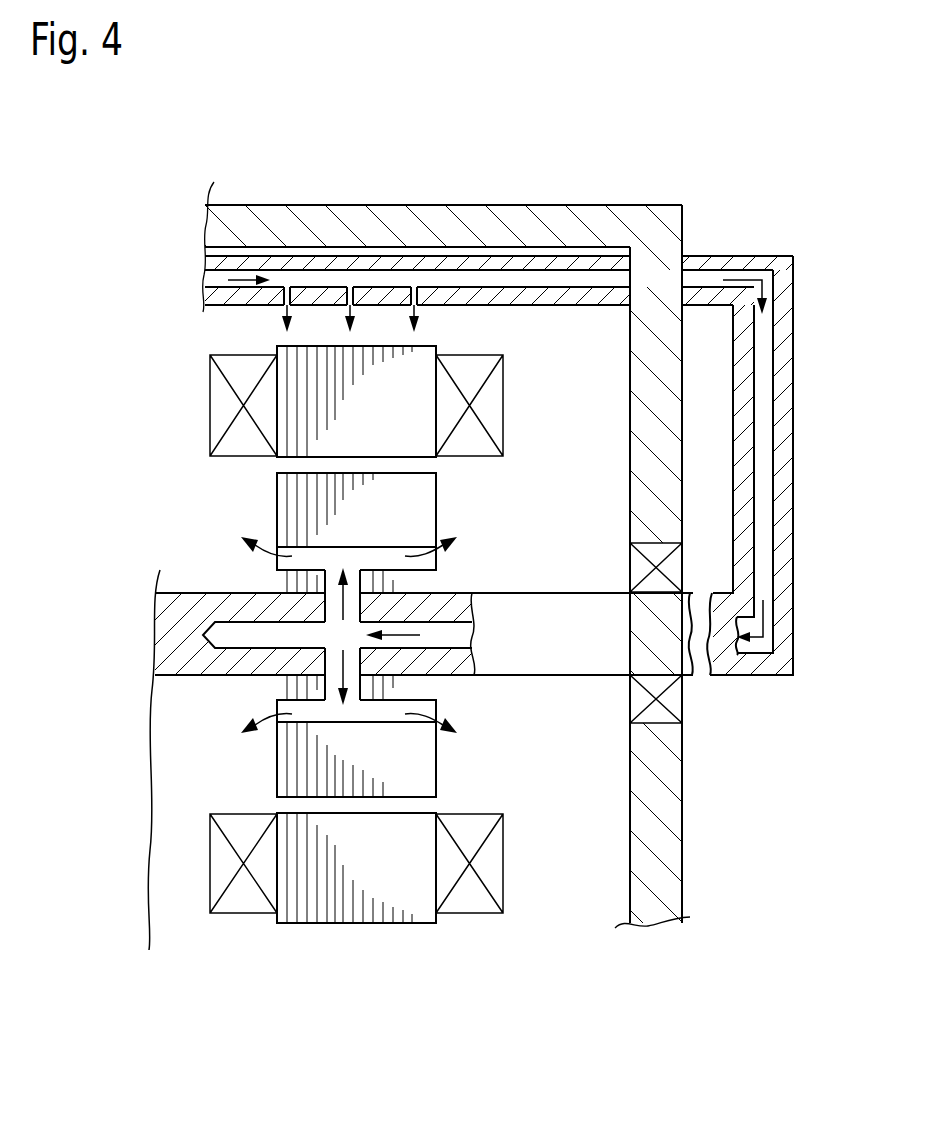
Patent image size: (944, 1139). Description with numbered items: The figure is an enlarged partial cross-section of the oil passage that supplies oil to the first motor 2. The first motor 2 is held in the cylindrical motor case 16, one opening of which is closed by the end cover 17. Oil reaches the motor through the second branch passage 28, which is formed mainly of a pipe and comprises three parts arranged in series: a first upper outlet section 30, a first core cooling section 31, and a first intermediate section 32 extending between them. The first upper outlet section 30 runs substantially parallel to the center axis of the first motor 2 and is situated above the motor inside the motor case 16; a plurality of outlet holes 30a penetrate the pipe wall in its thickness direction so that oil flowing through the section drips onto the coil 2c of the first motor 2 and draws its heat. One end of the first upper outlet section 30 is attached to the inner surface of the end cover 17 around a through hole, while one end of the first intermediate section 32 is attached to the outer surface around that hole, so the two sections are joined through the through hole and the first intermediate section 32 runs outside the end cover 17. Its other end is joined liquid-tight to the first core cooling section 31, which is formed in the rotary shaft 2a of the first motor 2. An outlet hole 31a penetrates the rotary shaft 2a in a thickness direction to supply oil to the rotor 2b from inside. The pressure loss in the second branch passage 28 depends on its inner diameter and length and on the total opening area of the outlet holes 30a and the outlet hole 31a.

The first motor 2 is at (164, 376).
The rotary shaft 2a is at (573, 668).
The rotor 2b is at (425, 497).
The coil 2c is at (210, 440).
The motor case 16 is at (403, 222).
The end cover 17 is at (665, 227).
The second branch passage 28 is at (802, 302).
The first upper outlet section 30 is at (520, 262).
The outlet holes 30a is at (351, 295).
The first core cooling section 31 is at (452, 645).
The outlet hole 31a is at (326, 665).
The first intermediate section 32 is at (787, 374).